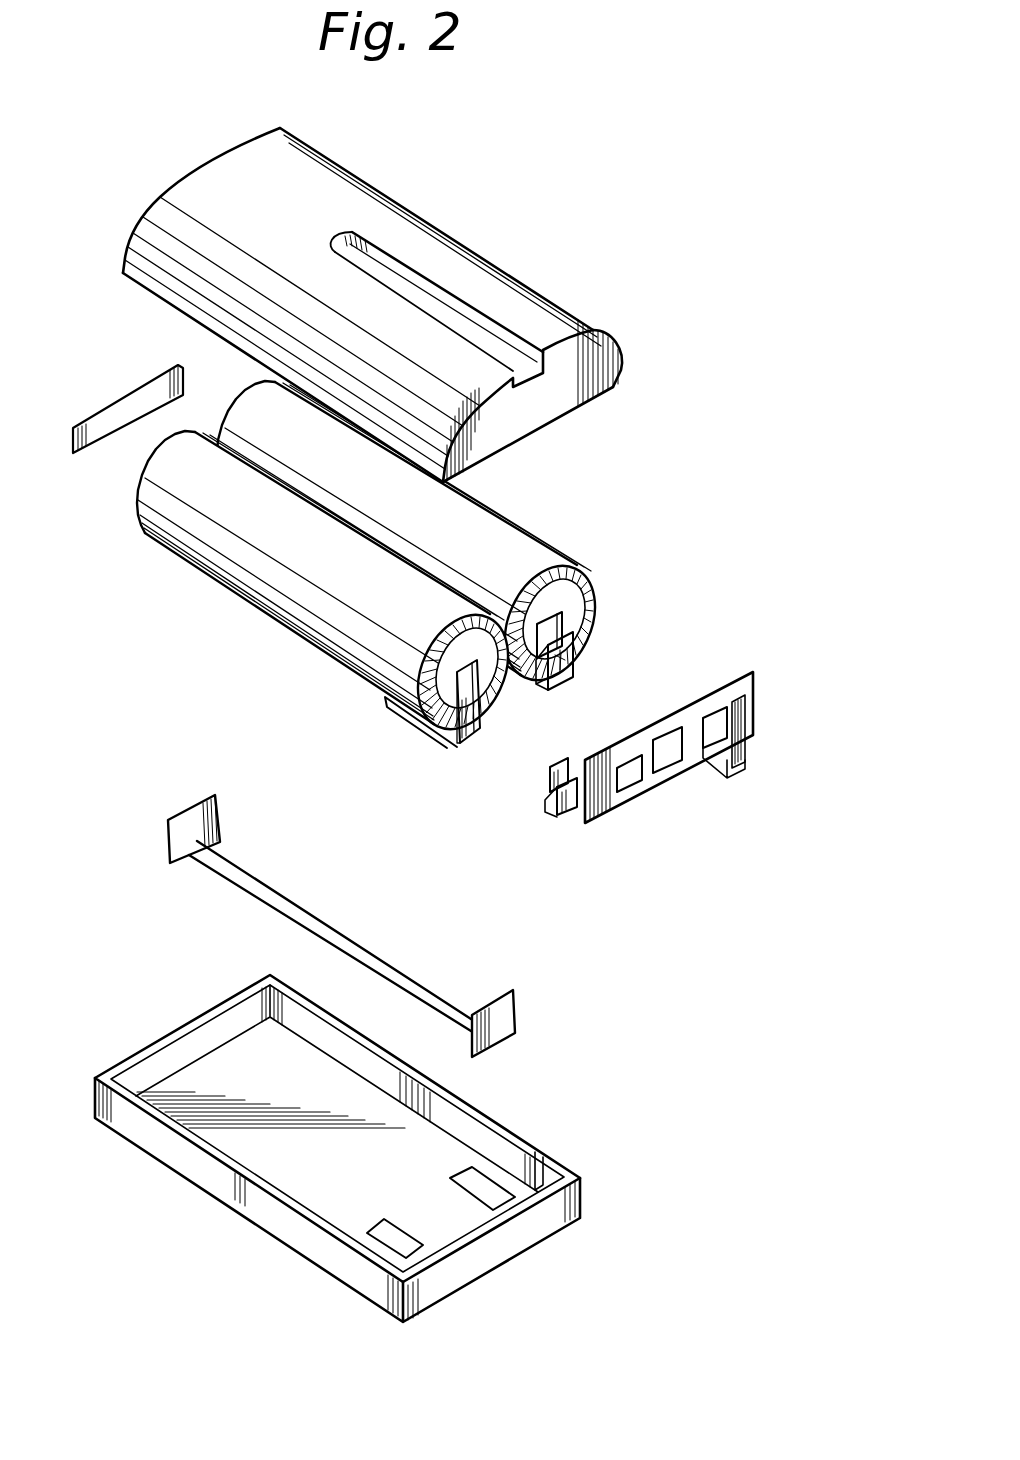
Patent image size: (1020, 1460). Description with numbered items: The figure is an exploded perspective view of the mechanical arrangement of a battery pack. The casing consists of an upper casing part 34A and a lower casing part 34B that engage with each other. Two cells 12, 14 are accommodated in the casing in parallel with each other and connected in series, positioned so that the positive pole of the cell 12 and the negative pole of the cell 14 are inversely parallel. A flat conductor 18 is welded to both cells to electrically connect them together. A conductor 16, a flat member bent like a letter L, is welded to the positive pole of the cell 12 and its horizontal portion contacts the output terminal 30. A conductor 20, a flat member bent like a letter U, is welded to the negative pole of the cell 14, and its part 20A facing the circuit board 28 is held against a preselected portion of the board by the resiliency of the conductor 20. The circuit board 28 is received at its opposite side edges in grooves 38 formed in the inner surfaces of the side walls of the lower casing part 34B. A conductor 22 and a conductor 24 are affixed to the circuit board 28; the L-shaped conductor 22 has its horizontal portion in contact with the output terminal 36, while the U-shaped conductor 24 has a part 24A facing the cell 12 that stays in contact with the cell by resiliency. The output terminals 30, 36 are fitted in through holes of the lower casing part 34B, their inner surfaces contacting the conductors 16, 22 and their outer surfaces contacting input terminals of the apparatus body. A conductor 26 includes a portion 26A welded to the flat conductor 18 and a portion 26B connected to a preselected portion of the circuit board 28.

The cell 12 is at (327, 627).
The cell 14 is at (480, 523).
The conductor 16 is at (475, 745).
The flat conductor 18 is at (114, 413).
The conductor 20 is at (558, 622).
The part of conductor 20 20A is at (562, 670).
The conductor 22 is at (678, 774).
The conductor 24 is at (568, 816).
The part of conductor 24 24A is at (546, 783).
The conductor 26 is at (387, 922).
The portion of conductor 26 26A is at (215, 823).
The portion of conductor 26 26B is at (503, 1027).
The circuit board 28 is at (623, 802).
The output terminal 30 is at (375, 1227).
The upper casing part 34A is at (487, 273).
The lower casing part 34B is at (349, 1148).
The output terminal 36 is at (473, 1193).
The groove 38 is at (543, 1168).